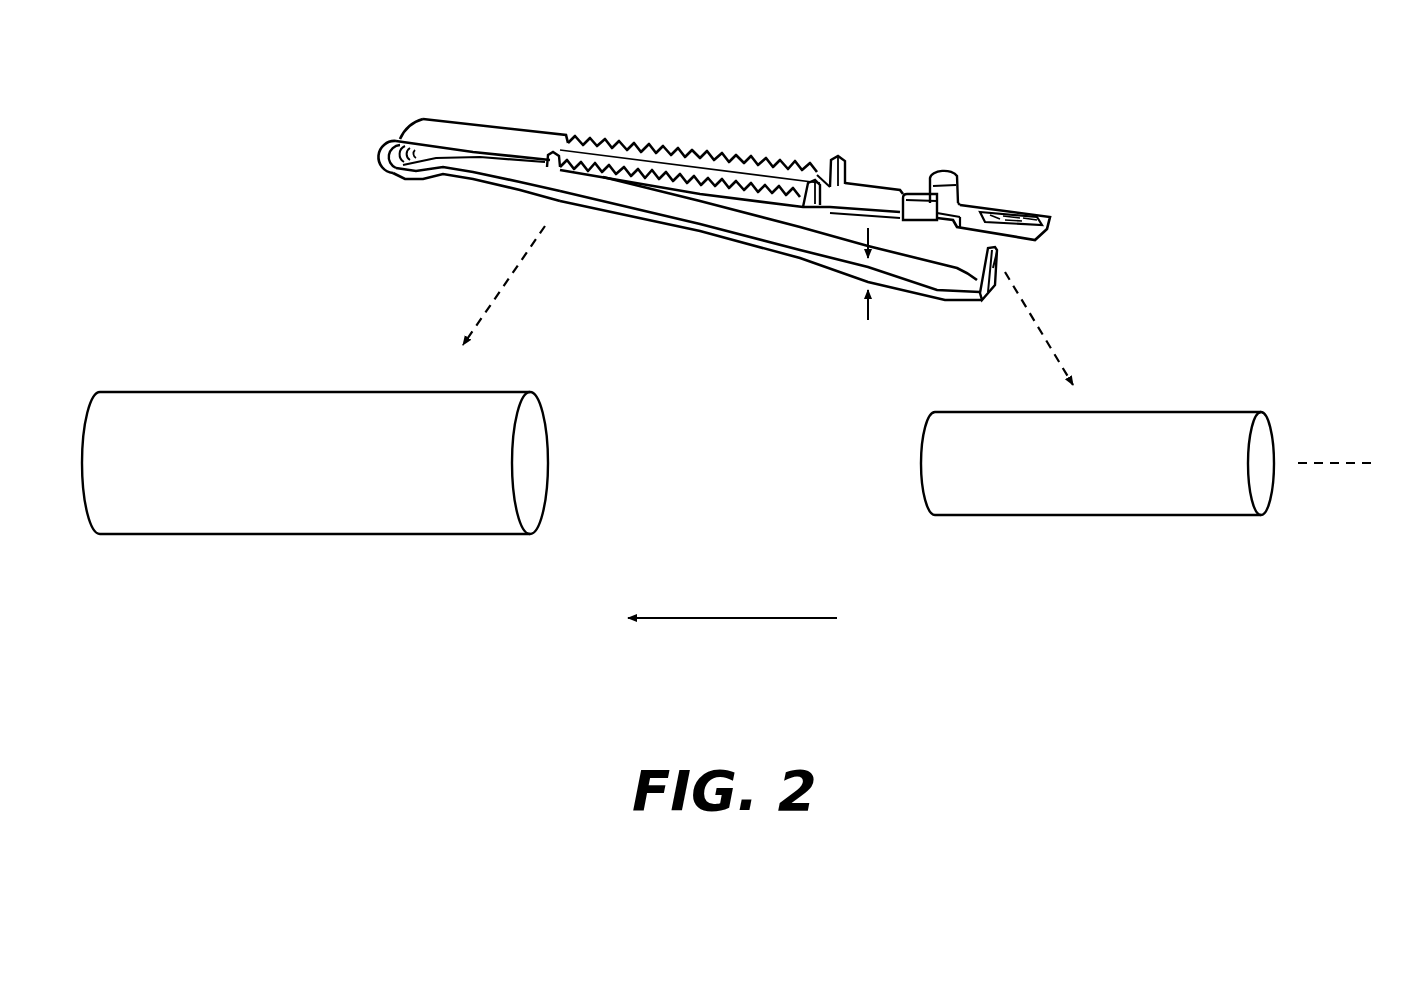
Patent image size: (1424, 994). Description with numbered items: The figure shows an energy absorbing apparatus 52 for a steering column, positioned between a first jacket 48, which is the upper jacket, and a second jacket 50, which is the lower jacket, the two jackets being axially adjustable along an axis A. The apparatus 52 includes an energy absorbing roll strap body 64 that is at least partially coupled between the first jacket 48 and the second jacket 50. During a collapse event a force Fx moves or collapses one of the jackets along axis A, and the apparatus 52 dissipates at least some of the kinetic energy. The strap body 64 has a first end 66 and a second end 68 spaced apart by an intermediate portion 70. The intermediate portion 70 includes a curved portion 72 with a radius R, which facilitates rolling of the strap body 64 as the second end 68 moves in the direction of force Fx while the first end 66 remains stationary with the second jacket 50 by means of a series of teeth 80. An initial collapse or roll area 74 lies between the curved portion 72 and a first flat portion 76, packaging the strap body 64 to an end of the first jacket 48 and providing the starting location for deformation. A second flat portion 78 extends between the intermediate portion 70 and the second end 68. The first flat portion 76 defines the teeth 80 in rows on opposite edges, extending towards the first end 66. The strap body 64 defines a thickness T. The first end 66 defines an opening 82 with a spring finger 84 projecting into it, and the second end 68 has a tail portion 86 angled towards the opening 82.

The energy absorbing apparatus 52 is at (1252, 138).
The intermediate portion 70 is at (386, 158).
The curved portion 72 is at (398, 141).
The initial collapse area 74 is at (420, 118).
The first flat portion 76 is at (713, 168).
The second flat portion 78 is at (730, 232).
The teeth 80 is at (660, 142).
The energy absorbing roll strap body 64 is at (872, 188).
The first end 66 is at (1049, 217).
The second end 68 is at (980, 294).
The opening 82 is at (978, 206).
The spring finger 84 is at (1009, 216).
The tail portion 86 is at (997, 268).
The second jacket 50 is at (548, 422).
The first jacket 48 is at (1272, 422).
The radius R is at (386, 173).
The thickness T is at (870, 292).
The axis A is at (1351, 465).
The force Fx is at (757, 618).